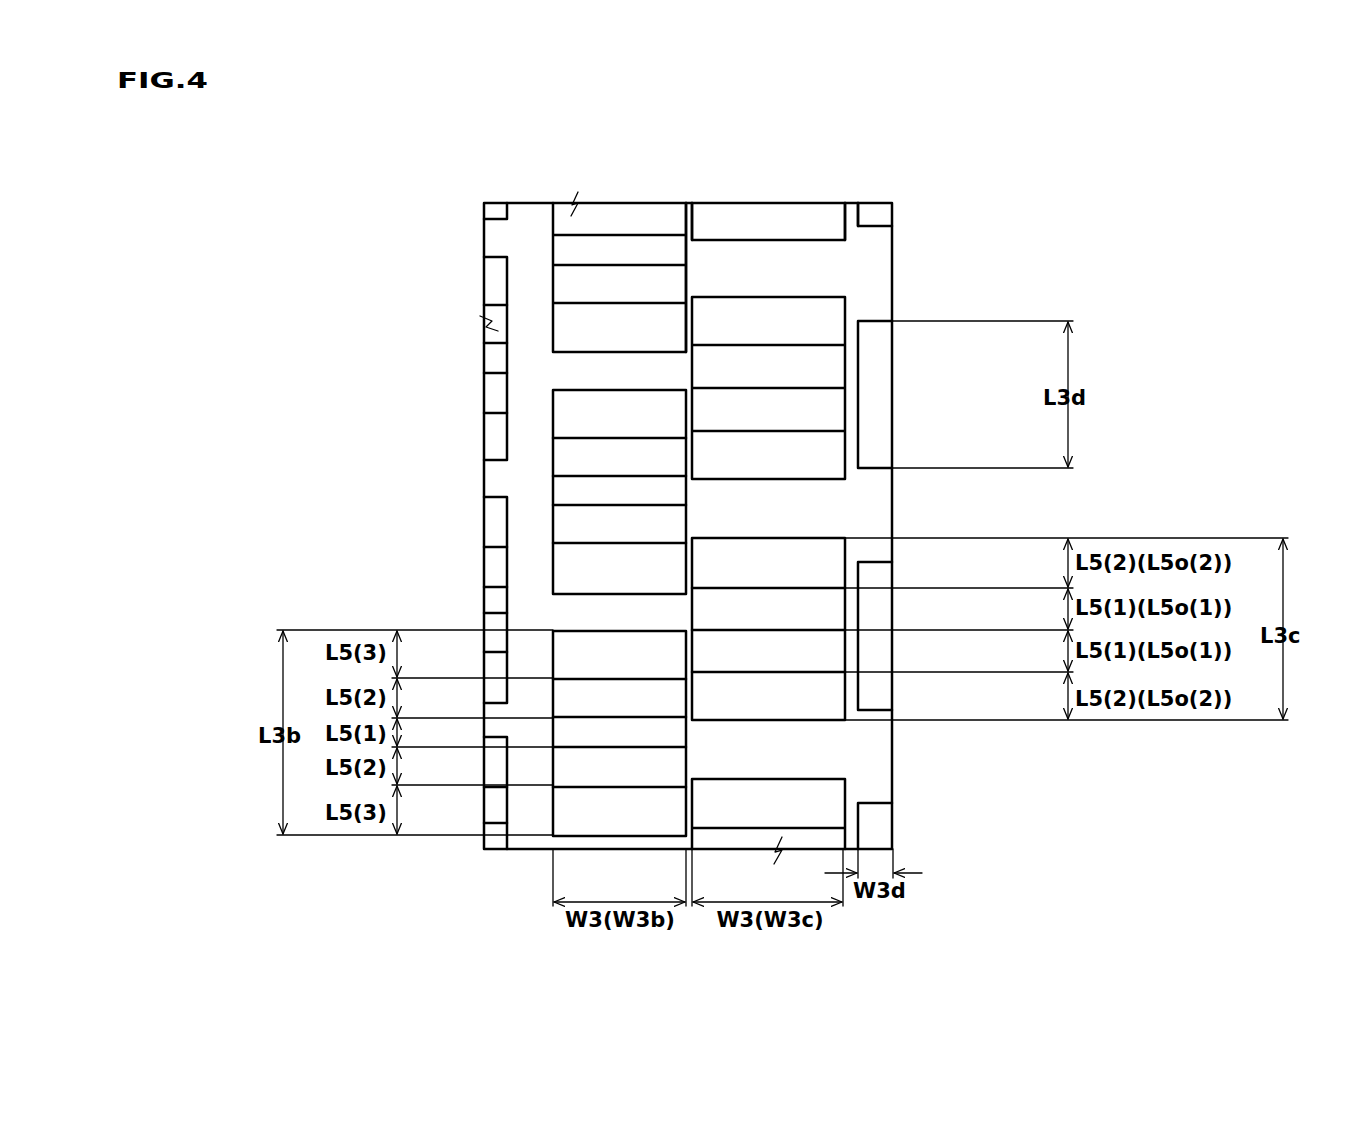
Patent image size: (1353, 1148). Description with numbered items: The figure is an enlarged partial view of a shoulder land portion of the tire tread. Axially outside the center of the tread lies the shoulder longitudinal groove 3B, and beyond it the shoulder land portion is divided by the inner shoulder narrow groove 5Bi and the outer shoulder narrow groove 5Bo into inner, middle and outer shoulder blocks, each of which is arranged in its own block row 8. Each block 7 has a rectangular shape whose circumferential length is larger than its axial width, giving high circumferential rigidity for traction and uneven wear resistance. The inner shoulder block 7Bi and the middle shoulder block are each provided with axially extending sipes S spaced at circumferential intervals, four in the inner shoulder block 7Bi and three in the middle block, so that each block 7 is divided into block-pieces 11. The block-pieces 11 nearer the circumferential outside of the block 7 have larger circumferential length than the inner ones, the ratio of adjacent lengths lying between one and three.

The shoulder longitudinal groove 3B is at (538, 252).
The block row 8 is at (621, 253).
The inner shoulder narrow groove 5Bi is at (690, 333).
The outer shoulder narrow groove 5Bo is at (854, 333).
The block 7 is at (869, 362).
The inner shoulder block 7Bi is at (611, 429).
The block-piece 11 is at (816, 567).
The sipe S is at (580, 438).